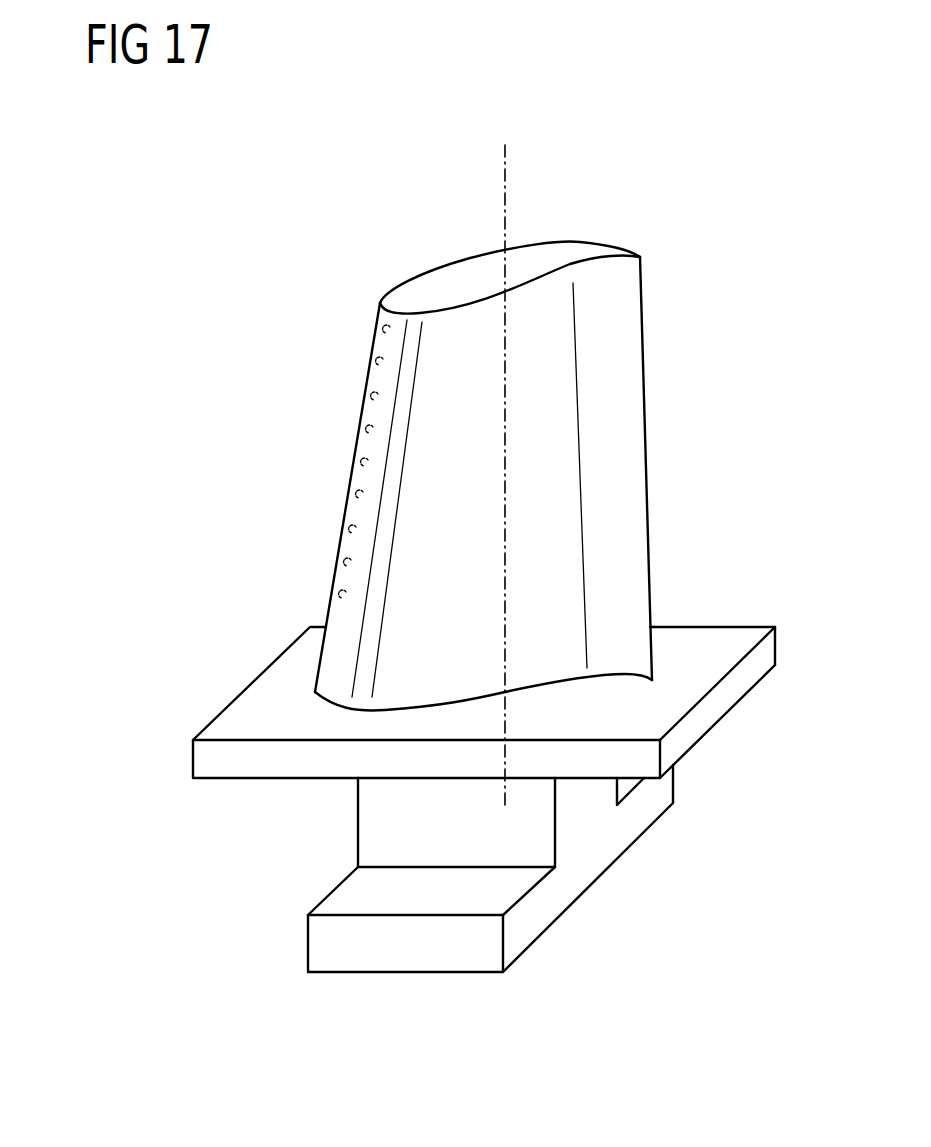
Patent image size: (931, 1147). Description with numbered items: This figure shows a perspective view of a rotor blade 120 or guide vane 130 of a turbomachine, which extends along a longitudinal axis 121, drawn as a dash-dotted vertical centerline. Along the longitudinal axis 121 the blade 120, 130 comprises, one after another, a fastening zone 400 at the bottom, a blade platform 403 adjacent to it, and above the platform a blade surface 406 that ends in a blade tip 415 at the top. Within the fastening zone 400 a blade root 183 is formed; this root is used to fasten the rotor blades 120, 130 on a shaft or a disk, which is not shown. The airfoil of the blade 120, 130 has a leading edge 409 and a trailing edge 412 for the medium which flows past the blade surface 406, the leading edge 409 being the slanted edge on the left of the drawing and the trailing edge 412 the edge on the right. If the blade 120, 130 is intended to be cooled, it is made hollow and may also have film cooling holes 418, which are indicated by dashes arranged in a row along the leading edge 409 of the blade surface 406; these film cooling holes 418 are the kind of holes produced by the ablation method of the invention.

The longitudinal axis 121 is at (506, 185).
The rotor blade 120 is at (414, 431).
The guide vane 130 is at (414, 431).
The leading edge 409 is at (358, 398).
The trailing edge 412 is at (650, 430).
The blade tip 415 is at (408, 293).
The film cooling holes 418 is at (382, 332).
The fastening zone 400 is at (533, 799).
The blade platform 403 is at (740, 677).
The blade surface 406 is at (337, 672).
The blade root 183 is at (348, 898).